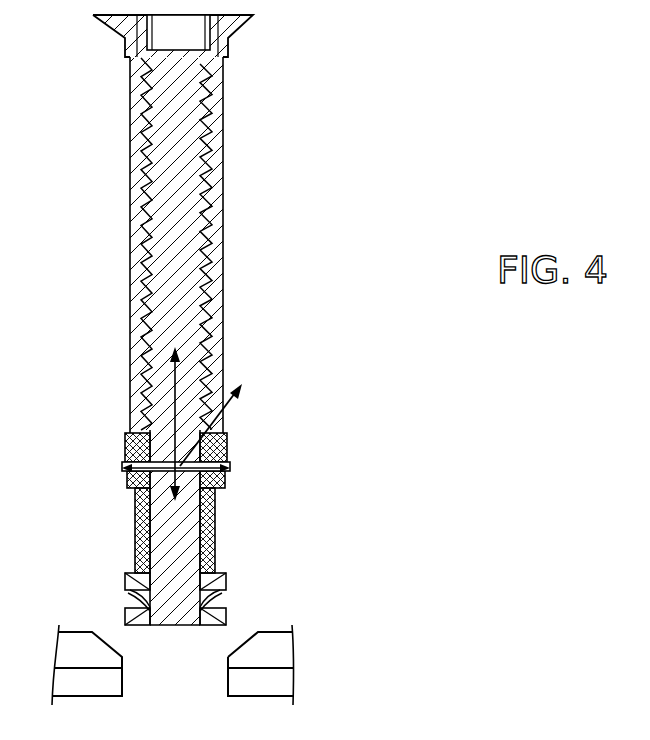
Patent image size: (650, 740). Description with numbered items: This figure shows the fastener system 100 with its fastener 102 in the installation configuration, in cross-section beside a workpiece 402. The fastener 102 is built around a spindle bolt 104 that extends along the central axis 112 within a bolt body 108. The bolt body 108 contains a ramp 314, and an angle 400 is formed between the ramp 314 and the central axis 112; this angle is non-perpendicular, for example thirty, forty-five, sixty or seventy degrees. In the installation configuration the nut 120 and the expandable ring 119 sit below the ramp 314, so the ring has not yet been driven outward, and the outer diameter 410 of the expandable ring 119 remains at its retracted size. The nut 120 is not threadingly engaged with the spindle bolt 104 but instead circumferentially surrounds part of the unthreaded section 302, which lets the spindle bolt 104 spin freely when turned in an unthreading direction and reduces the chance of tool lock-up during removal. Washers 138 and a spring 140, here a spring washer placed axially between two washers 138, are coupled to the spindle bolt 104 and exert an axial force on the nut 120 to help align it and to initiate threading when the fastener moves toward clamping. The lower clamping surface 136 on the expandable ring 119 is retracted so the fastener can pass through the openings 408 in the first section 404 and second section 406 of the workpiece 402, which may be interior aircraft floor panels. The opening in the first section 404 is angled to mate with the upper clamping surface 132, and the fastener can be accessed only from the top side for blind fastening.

The fastener system 100 is at (482, 92).
The fastener 102 is at (320, 625).
The spindle bolt 104 is at (148, 318).
The bolt body 108 is at (216, 229).
The central axis 112 is at (174, 385).
The expandable ring 119 is at (112, 465).
The nut 120 is at (150, 527).
The upper clamping surface 132 is at (167, 43).
The lower clamping surface 136 is at (130, 452).
The washers 138 is at (125, 582).
The spring 140 is at (225, 606).
The unthreaded section 302 is at (130, 533).
The ramp 314 is at (215, 425).
The angle 400 is at (180, 462).
The workpiece 402 is at (86, 681).
The first section 404 is at (95, 661).
The second section 406 is at (87, 682).
The openings 408 is at (180, 698).
The outer diameter 410 is at (166, 473).